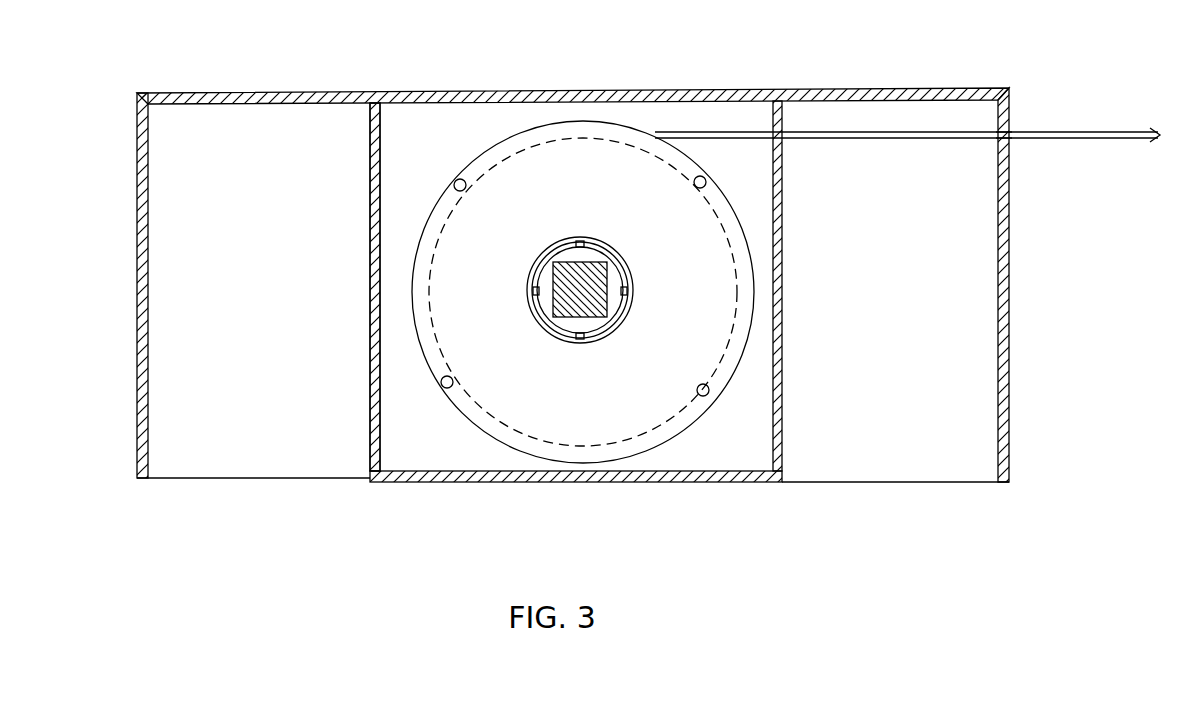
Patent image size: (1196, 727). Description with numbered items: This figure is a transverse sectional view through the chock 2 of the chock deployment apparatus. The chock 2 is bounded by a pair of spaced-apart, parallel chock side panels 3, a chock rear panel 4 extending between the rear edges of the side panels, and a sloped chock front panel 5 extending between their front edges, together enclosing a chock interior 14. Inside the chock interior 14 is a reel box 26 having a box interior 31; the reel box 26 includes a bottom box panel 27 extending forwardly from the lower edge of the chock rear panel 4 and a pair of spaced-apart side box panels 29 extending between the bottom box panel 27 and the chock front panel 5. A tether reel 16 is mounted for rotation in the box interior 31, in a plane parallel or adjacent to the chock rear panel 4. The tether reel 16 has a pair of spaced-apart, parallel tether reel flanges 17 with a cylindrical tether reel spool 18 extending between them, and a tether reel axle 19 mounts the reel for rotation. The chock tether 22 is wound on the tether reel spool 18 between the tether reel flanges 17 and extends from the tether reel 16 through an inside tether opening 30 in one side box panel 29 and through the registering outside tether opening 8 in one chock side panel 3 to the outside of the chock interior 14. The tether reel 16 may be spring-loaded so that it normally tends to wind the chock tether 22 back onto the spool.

The chock 2 is at (136, 203).
The chock side panel 3 is at (137, 340).
The chock rear panel 4 is at (865, 397).
The chock front panel 5 is at (850, 88).
The outside tether opening 8 is at (1006, 150).
The chock interior 14 is at (296, 440).
The tether reel 16 is at (466, 164).
The tether reel flange 17 is at (415, 260).
The tether reel spool 18 is at (445, 220).
The tether reel axle 19 is at (582, 293).
The chock tether 22 is at (1090, 133).
The reel box 26 is at (371, 426).
The bottom box panel 27 is at (657, 483).
The side box panel 29 is at (370, 322).
The inside tether opening 30 is at (781, 140).
The box interior 31 is at (457, 448).